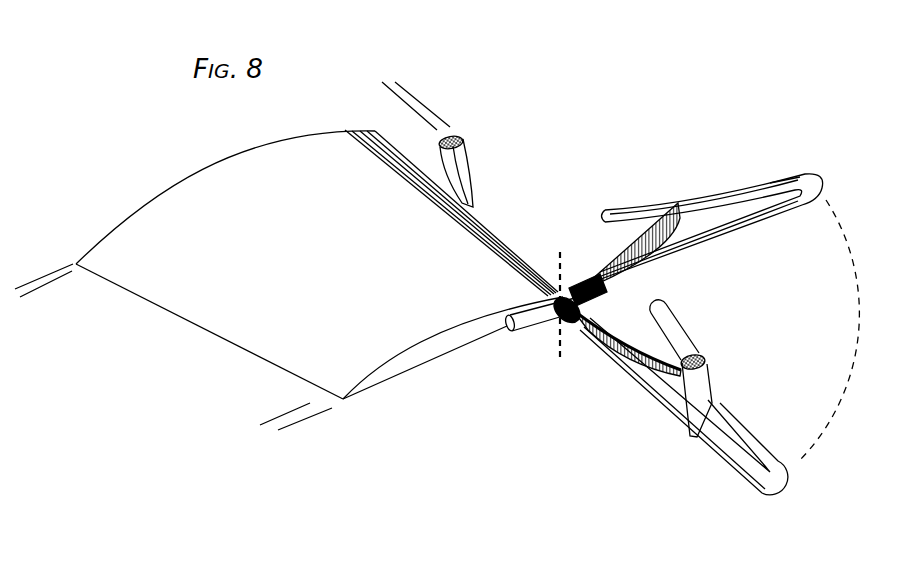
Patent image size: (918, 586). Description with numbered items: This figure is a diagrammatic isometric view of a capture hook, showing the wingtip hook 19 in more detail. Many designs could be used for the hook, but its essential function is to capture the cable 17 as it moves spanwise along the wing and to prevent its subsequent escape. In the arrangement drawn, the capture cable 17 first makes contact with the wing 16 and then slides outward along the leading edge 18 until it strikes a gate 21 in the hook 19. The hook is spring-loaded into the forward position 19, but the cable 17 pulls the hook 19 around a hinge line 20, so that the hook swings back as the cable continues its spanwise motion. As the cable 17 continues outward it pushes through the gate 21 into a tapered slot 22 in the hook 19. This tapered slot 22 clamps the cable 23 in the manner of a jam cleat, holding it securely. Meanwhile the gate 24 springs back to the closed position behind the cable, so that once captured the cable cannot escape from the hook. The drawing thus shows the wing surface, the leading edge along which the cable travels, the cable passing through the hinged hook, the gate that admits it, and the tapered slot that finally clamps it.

The wing 16 is at (283, 262).
The capture cable 17 is at (466, 133).
The leading edge 18 is at (486, 216).
The wingtip hook 19 is at (755, 180).
The hinge line 20 is at (558, 361).
The gate 21 is at (680, 190).
The tapered slot 22 is at (772, 200).
The cable 23 is at (705, 352).
The gate 24 is at (647, 347).